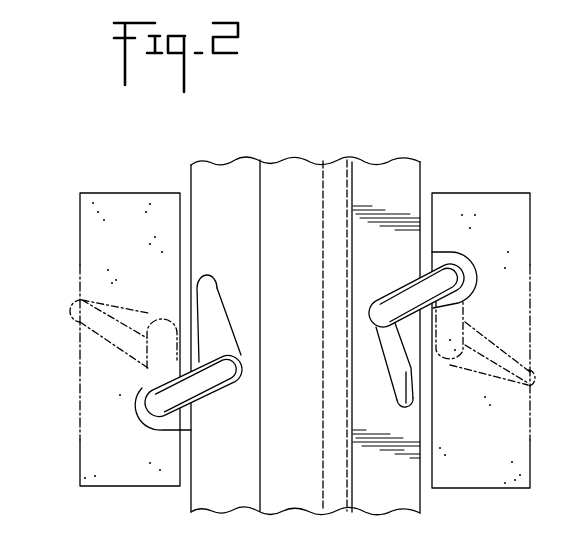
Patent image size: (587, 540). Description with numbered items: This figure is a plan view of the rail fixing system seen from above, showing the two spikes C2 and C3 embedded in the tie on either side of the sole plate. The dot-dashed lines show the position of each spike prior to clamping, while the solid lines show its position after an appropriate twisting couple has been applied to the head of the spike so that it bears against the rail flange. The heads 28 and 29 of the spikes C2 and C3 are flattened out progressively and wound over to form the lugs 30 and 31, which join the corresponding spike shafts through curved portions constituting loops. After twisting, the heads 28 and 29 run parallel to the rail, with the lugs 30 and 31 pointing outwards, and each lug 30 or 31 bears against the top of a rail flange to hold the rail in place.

The head 28 is at (246, 339).
The head 29 is at (380, 354).
The lug 30 is at (221, 309).
The lug 31 is at (406, 401).
The spike C2 is at (209, 402).
The spike C3 is at (379, 293).